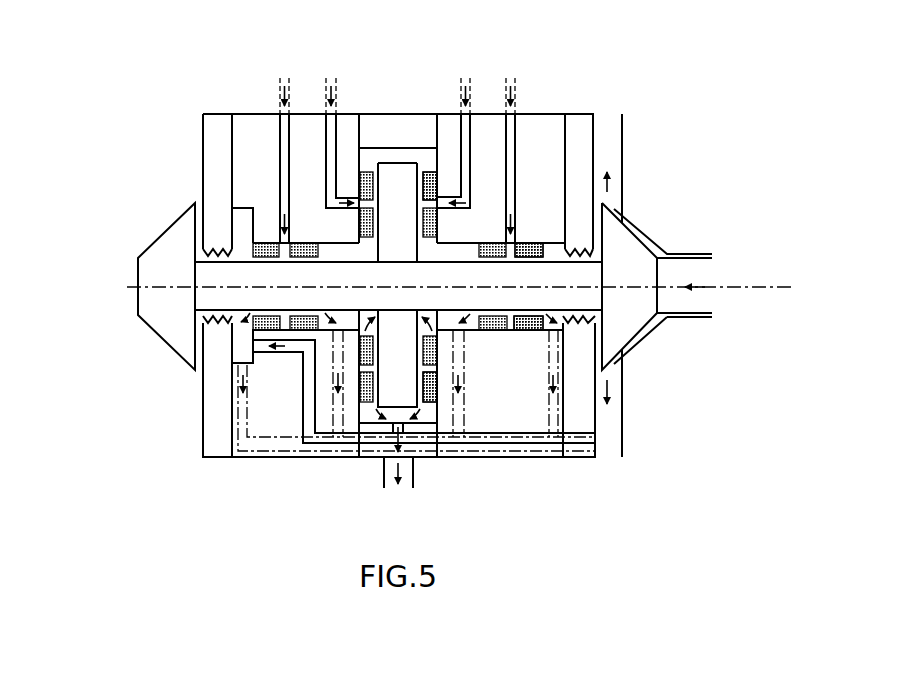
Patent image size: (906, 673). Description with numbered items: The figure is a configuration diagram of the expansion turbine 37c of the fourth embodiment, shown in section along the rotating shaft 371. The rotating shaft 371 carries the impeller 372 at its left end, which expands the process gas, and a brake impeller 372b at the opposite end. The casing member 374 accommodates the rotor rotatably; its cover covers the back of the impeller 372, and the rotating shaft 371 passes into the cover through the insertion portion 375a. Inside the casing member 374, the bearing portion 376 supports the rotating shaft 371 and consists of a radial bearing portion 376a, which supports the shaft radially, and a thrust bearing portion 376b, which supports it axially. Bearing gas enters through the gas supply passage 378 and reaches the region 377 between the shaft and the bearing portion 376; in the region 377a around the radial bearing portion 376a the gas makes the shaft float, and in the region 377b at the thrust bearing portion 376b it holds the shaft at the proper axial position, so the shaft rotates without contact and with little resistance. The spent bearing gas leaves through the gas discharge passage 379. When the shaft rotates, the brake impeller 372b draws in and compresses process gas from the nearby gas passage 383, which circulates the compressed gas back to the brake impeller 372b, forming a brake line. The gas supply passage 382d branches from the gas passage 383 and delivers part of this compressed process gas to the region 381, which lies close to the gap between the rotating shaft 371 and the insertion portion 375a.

The rotating shaft 371 is at (585, 295).
The impeller 372 is at (167, 227).
The brake impeller 372b is at (633, 228).
The casing member 374 is at (604, 97).
The insertion portion 375a is at (230, 250).
The bearing portion 376 is at (724, 382).
The radial bearing portion 376a is at (437, 385).
The thrust bearing portion 376b is at (528, 330).
The region between rotating shaft and bearing portion 377 is at (724, 128).
The region between rotating shaft and radial bearing portion 377a is at (528, 260).
The region between rotating shaft and thrust bearing portion 377b is at (435, 180).
The gas supply passage 378 is at (269, 128).
The gas discharge passage 379 is at (325, 450).
The expansion turbine 37c is at (424, 82).
The region 381 is at (240, 342).
The gas supply passage 382d is at (302, 407).
The gas passage 383 is at (608, 443).